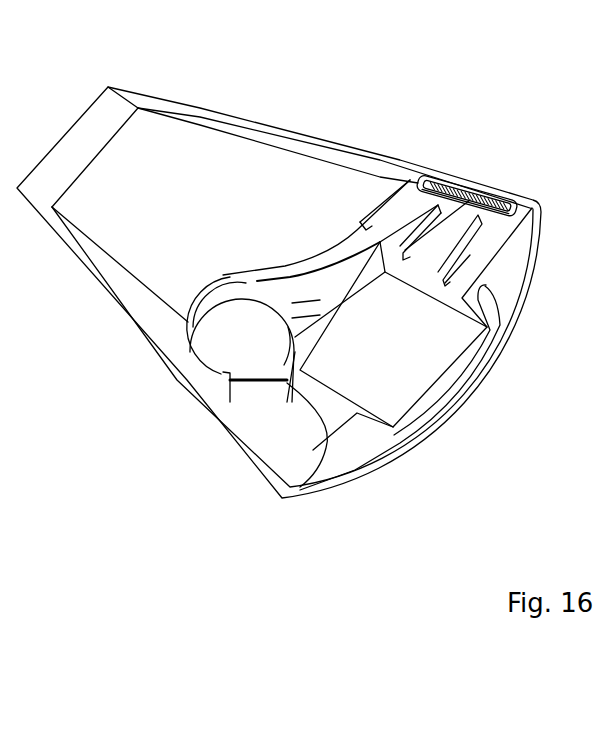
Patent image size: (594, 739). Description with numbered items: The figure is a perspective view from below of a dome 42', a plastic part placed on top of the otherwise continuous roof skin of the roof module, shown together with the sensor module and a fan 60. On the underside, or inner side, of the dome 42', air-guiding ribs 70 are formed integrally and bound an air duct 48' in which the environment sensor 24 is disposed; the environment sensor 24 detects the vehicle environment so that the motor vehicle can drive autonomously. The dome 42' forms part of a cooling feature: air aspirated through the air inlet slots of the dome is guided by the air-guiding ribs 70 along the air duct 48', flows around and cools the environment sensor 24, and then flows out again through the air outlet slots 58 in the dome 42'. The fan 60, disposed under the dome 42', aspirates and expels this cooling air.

The dome 42' is at (279, 268).
The air-guiding ribs 70 is at (372, 230).
The air duct 48' is at (465, 125).
The air outlet slots 58 is at (487, 198).
The environment sensor 24 is at (408, 388).
The fan 60 is at (242, 325).